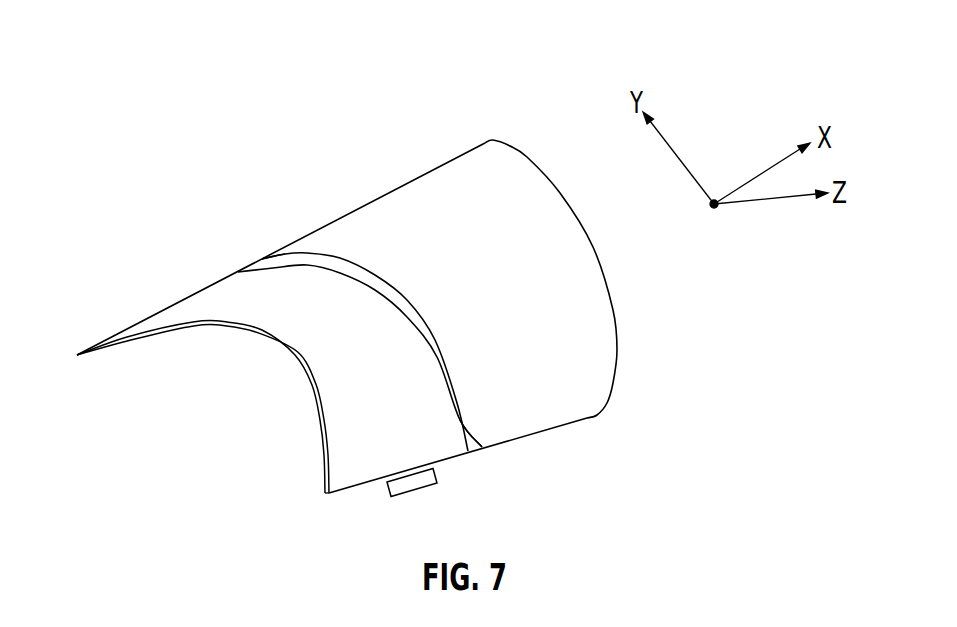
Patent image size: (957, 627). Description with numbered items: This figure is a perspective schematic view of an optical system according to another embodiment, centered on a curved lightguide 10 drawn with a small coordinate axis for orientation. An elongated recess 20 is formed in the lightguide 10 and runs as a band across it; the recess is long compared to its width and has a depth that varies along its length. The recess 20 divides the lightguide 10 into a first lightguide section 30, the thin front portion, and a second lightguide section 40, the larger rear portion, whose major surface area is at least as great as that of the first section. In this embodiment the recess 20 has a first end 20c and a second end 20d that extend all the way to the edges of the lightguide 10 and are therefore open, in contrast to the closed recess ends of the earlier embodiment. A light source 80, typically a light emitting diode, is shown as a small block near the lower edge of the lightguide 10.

The lightguide 10 is at (581, 424).
The elongated recess 20 is at (340, 256).
The first end of recess 20c is at (475, 451).
The second end of recess 20d is at (257, 258).
The first lightguide section 30 is at (190, 308).
The second lightguide section 40 is at (460, 170).
The light source 80 is at (387, 488).